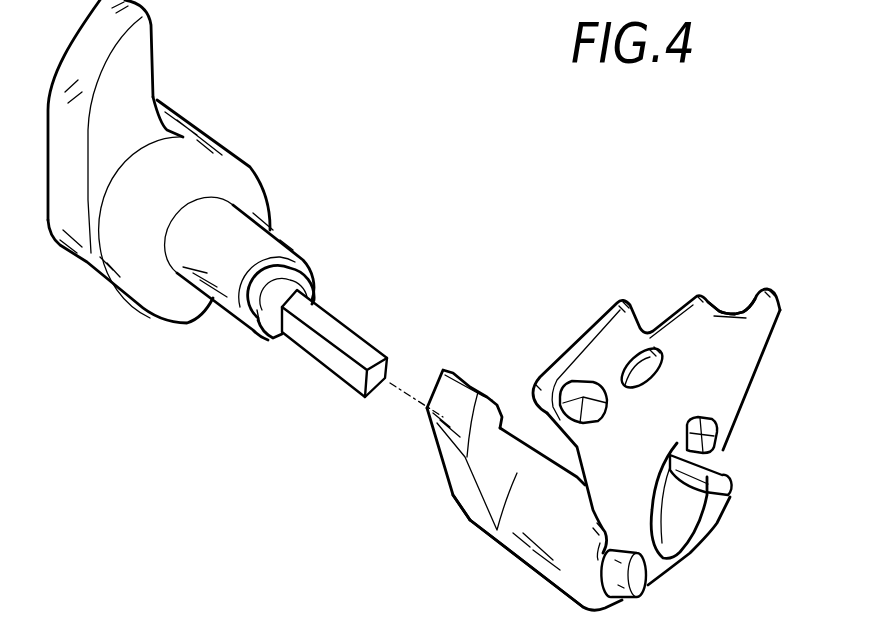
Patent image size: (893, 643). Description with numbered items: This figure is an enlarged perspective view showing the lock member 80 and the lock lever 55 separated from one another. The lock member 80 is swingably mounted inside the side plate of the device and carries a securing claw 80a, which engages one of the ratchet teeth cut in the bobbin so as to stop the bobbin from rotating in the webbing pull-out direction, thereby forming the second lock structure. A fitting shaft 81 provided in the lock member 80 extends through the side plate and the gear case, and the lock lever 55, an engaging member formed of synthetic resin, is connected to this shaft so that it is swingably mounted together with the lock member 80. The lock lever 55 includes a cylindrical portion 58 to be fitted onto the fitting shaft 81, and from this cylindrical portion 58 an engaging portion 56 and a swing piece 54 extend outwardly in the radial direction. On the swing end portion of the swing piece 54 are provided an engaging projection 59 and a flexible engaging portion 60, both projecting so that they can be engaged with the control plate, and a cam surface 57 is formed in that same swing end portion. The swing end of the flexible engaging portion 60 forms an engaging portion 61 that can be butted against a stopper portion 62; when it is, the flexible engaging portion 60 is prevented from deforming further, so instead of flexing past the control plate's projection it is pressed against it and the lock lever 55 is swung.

The lock member 80 is at (235, 132).
The securing claw 80a is at (138, 62).
The fitting shaft 81 is at (347, 337).
The lock lever 55 is at (587, 295).
The swing piece 54 is at (740, 370).
The bent tab 56 is at (471, 382).
The cam surface 57 is at (739, 300).
The cylindrical portion 58 is at (547, 565).
The engaging projection 59 is at (600, 423).
The flexible engaging portion 60 is at (730, 488).
The engaging portion 61 is at (687, 437).
The stopper portion 62 is at (717, 445).